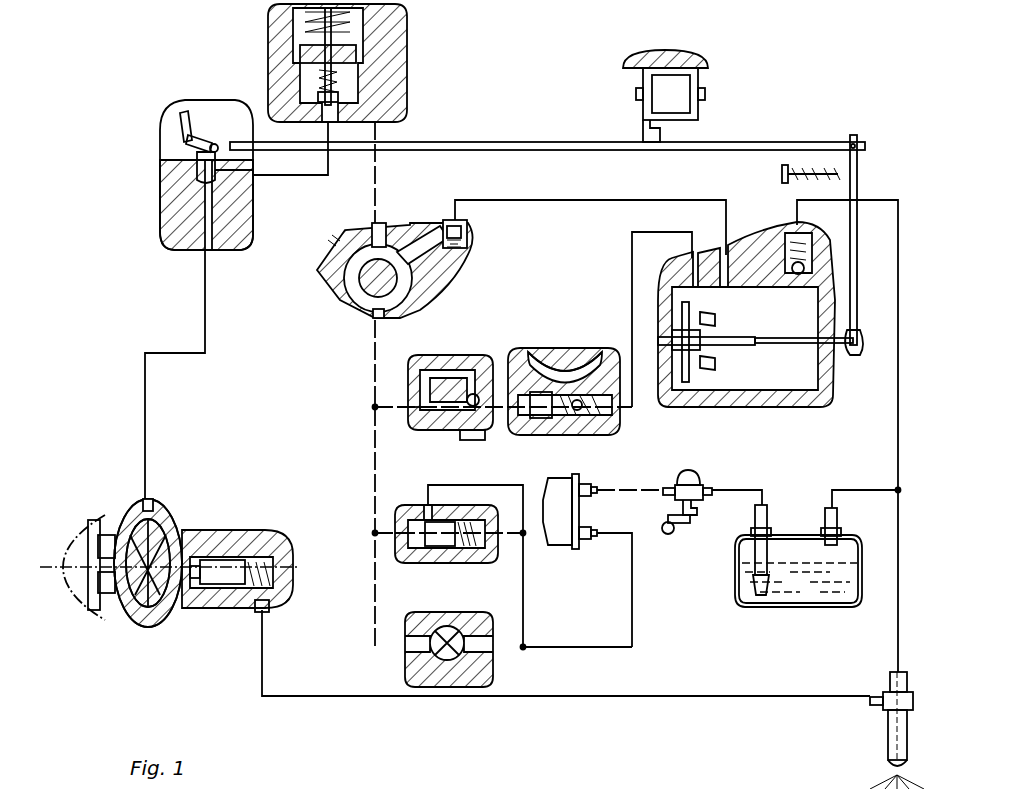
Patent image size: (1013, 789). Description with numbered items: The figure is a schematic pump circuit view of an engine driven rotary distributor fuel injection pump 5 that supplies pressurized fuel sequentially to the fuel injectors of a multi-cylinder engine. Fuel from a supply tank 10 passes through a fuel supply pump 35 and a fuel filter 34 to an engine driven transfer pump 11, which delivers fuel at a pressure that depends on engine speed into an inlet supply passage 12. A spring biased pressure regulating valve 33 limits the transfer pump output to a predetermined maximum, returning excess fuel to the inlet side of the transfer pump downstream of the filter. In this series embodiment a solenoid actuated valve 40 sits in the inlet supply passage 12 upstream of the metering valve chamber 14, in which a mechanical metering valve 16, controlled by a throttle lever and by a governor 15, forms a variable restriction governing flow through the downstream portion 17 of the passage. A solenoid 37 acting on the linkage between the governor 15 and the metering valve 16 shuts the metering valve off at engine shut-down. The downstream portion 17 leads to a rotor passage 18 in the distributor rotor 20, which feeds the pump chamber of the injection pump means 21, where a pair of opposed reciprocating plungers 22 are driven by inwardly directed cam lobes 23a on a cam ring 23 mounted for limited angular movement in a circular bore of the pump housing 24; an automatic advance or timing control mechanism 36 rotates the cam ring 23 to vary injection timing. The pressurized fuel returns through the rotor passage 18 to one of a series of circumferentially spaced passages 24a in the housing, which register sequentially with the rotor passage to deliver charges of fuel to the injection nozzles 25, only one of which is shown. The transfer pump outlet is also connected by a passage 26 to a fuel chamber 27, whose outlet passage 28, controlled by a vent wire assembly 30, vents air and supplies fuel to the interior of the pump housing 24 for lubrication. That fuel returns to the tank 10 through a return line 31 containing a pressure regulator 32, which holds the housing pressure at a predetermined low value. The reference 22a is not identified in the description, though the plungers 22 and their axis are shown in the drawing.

The rotary distributor fuel injection pump 5 is at (838, 112).
The supply tank 10 is at (737, 557).
The transfer pump 11 is at (455, 660).
The inlet supply passage 12 is at (203, 312).
The metering valve chamber 14 is at (205, 168).
The governor 15 is at (762, 145).
The mechanical metering valve 16 is at (200, 150).
The downstream portion of the supply passage 17 is at (145, 415).
The rotor passage 18 is at (157, 507).
The distributor rotor 20 is at (215, 585).
The injection pump means 21 is at (103, 605).
The reciprocating plungers 22 is at (102, 546).
The jaw axis 22a is at (100, 568).
The cam ring 23 is at (597, 360).
The cam lobes 23a is at (577, 377).
The pump housing 24 is at (183, 215).
The passages 24a is at (265, 605).
The injection nozzles 25 is at (893, 727).
The passage 26 is at (407, 247).
The fuel chamber 27 is at (462, 263).
The passage 28 is at (580, 200).
The vent wire assembly 30 is at (470, 250).
The return line 31 is at (898, 430).
The pressure regulator 32 is at (795, 266).
The spring biased pressure regulating valve 33 is at (445, 540).
The fuel filter 34 is at (560, 545).
The fuel supply pump 35 is at (690, 474).
The automatic advance or timing control mechanism 36 is at (558, 430).
The solenoid 37 is at (694, 72).
The solenoid actuated valve 40 is at (363, 52).